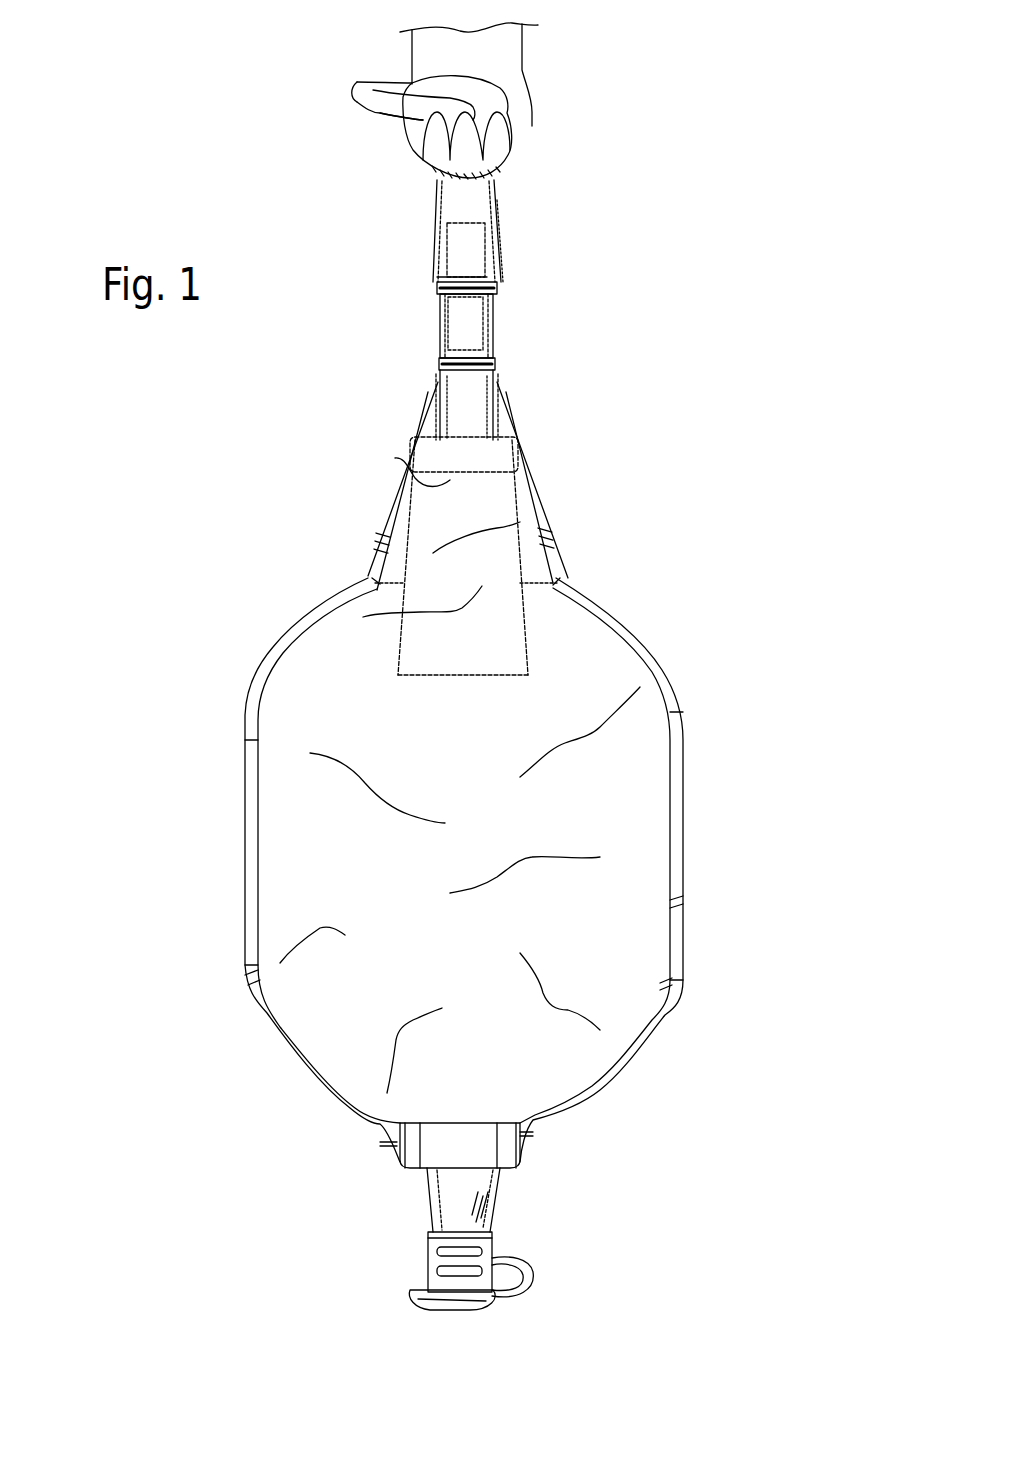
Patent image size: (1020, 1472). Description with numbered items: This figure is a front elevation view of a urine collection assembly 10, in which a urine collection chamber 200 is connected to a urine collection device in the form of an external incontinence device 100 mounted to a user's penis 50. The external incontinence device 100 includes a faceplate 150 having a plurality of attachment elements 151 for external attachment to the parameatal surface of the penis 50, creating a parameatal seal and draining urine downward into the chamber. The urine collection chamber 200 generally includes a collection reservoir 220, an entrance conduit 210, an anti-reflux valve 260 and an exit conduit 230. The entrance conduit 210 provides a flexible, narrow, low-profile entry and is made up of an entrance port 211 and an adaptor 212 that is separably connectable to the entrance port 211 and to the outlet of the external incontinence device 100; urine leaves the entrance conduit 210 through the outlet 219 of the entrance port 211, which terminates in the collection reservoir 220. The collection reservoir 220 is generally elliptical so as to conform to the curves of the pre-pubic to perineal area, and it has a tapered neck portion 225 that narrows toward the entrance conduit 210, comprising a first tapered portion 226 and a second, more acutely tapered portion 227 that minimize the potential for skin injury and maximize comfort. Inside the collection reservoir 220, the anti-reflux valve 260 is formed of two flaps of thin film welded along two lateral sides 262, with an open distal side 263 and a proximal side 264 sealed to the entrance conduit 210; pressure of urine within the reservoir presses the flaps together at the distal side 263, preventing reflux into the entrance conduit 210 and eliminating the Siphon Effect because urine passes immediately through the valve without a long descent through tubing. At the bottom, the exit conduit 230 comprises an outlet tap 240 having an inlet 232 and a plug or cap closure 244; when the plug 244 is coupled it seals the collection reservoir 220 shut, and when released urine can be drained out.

The urine collection assembly 10 is at (664, 246).
The user's penis 50 is at (538, 57).
The external incontinence device 100 is at (479, 206).
The faceplate 150 is at (430, 150).
The attachment elements of the faceplate 151 is at (428, 118).
The urine collection chamber 200 is at (443, 884).
The entrance conduit 210 is at (475, 358).
The entrance port 211 is at (496, 329).
The adaptor 212 is at (500, 272).
The outlet of the entrance port 219 is at (395, 458).
The collection reservoir 220 is at (630, 818).
The tapered neck portion 225 is at (352, 528).
The first tapered portion 226 is at (558, 527).
The second tapered portion 227 is at (514, 418).
The exit conduit 230 is at (434, 1217).
The inlet of the outlet tap 232 is at (466, 1122).
The outlet tap 240 is at (498, 1204).
The plug or cap closure 244 is at (450, 1312).
The anti-reflux valve 260 is at (463, 596).
The lateral sides 262 is at (376, 578).
The distal side 263 is at (421, 678).
The proximal side 264 is at (470, 440).